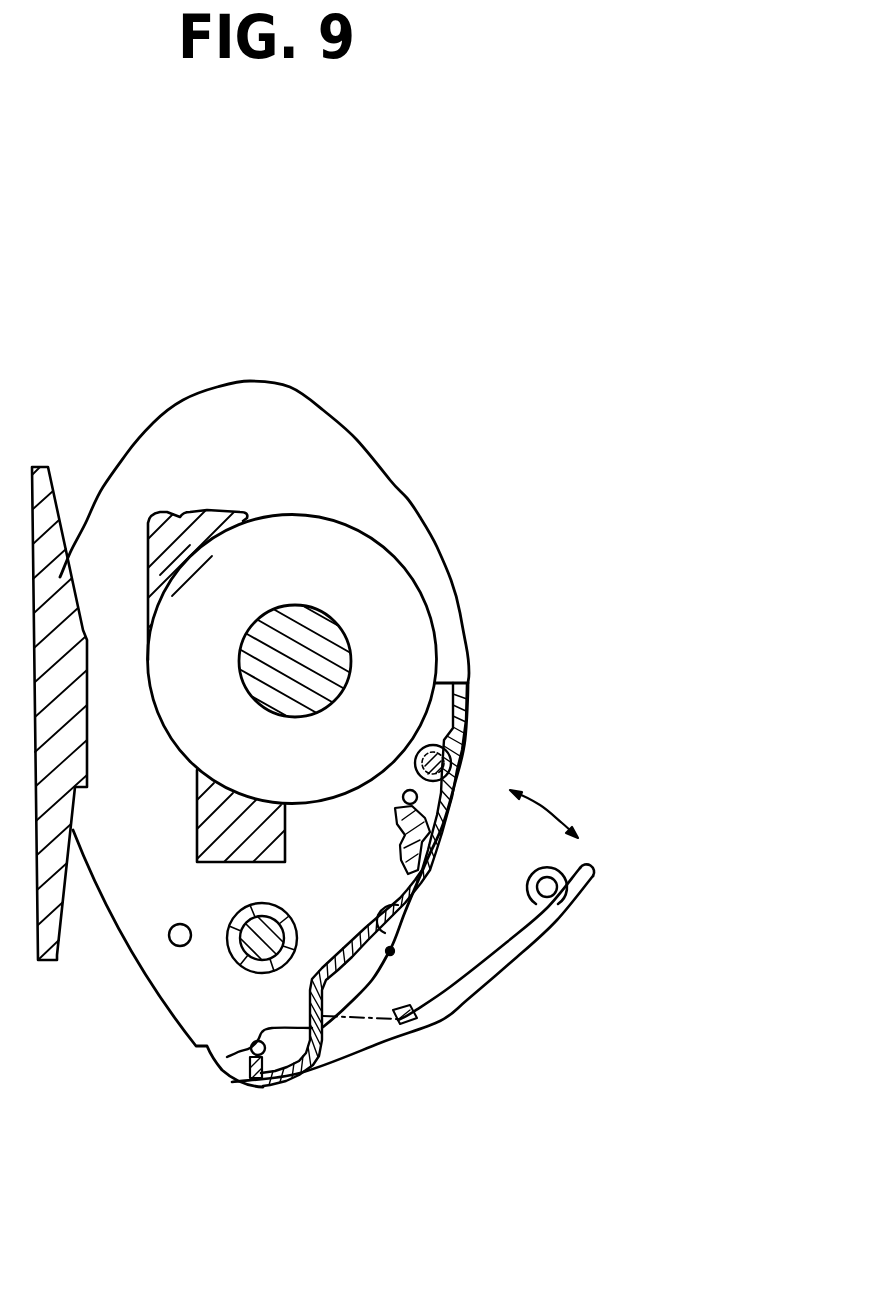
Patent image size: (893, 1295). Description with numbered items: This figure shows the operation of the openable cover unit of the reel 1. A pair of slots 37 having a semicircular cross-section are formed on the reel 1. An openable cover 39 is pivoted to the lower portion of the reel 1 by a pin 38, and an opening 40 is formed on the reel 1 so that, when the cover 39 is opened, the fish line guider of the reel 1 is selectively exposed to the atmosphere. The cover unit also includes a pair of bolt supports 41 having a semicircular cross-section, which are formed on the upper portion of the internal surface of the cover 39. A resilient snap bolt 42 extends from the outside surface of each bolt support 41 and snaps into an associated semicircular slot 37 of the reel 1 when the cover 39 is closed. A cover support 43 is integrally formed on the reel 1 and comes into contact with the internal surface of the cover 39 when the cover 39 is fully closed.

The reel 1 is at (408, 424).
The slot 37 is at (470, 692).
The pin 38 is at (253, 1085).
The openable cover 39 is at (392, 952).
The opening 40 is at (379, 980).
The bolt support 41 is at (457, 786).
The resilient snap bolt 42 is at (458, 744).
The cover support 43 is at (428, 875).